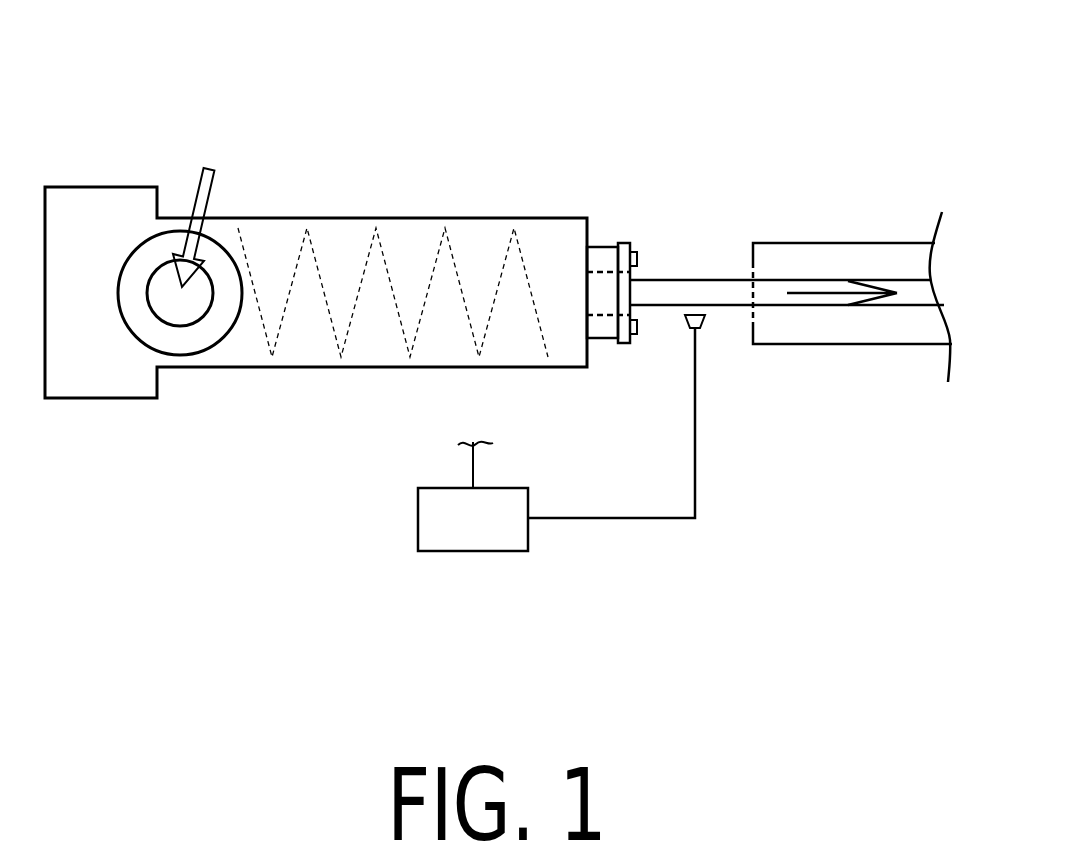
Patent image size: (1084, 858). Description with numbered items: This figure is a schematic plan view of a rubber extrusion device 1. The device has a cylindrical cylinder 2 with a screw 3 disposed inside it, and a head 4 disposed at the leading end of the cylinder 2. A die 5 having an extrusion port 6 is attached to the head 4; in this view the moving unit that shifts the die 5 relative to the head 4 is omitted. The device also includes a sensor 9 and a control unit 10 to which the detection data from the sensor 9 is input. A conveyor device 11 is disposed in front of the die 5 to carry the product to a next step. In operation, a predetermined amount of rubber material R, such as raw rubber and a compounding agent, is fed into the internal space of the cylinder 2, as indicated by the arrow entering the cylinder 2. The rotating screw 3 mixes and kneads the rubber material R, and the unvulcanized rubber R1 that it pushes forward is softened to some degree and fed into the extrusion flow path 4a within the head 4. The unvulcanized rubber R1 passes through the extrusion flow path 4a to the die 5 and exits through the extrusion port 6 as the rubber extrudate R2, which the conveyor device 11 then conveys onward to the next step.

The rubber extrusion device 1 is at (493, 158).
The cylinder 2 is at (337, 230).
The screw 3 is at (280, 328).
The unvulcanized rubber R1 is at (412, 255).
The rubber material R is at (198, 204).
The head 4 is at (602, 255).
The extrusion flow path 4a is at (600, 307).
The die 5 is at (633, 246).
The extrusion port 6 is at (633, 288).
The sensor 9 is at (703, 320).
The control unit 10 is at (463, 542).
The conveyor device 11 is at (858, 333).
The rubber extrudate R2 is at (778, 287).